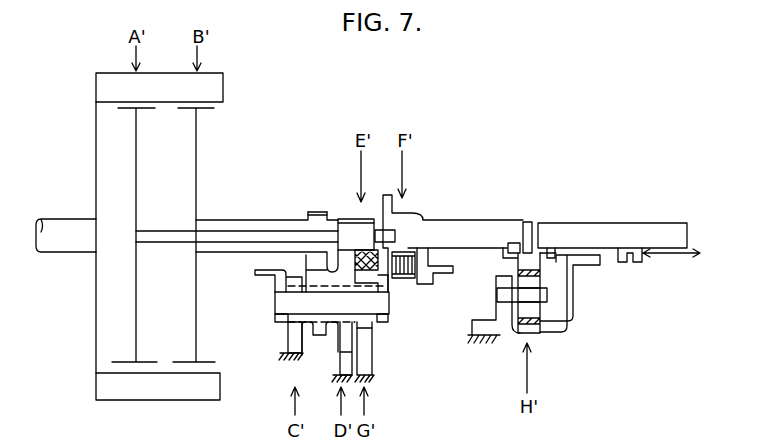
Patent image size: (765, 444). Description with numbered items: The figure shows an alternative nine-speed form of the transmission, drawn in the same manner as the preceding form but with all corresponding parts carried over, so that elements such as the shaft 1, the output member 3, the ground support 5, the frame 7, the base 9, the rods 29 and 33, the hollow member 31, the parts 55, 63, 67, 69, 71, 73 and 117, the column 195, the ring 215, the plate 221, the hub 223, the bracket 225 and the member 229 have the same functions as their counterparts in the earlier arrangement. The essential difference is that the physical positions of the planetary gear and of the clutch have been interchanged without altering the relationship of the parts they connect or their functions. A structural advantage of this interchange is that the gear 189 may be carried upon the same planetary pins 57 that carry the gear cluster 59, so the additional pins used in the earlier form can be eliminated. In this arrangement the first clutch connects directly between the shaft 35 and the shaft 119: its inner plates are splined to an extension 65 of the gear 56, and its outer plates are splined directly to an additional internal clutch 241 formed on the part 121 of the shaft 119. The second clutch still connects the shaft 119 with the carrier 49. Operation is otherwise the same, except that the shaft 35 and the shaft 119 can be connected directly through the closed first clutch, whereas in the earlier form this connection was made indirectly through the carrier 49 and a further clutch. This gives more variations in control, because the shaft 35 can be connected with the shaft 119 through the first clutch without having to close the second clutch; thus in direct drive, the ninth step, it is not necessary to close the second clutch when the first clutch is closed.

The input shaft 1 is at (65, 247).
The output shaft 3 is at (660, 230).
The housing ground 5 is at (473, 346).
The frame 7 is at (95, 341).
The frame base plate 9 is at (153, 395).
The second rod 29 is at (196, 346).
The hollow shaft 31 is at (230, 253).
The first rod 33 is at (135, 345).
The shaft 35 is at (172, 233).
The carrier 49 is at (424, 285).
The support 55 is at (500, 323).
The gear 56 is at (346, 230).
The planetary pins 57 is at (278, 301).
The gear cluster 59 is at (276, 336).
The column 63 is at (347, 353).
The extension of gear 65 is at (365, 228).
The cup member 67 is at (317, 341).
The flange 69 is at (318, 212).
The column 71 is at (297, 331).
The base 73 is at (294, 338).
The base 117 is at (339, 364).
The shaft 119 is at (473, 230).
The part of shaft 121 is at (388, 284).
The gear 189 is at (366, 320).
The column 195 is at (366, 331).
The ring 215 is at (506, 292).
The plate 221 is at (523, 222).
The hub 223 is at (538, 334).
The bracket 225 is at (574, 284).
The cup 229 is at (625, 259).
The internal clutch 241 is at (394, 247).